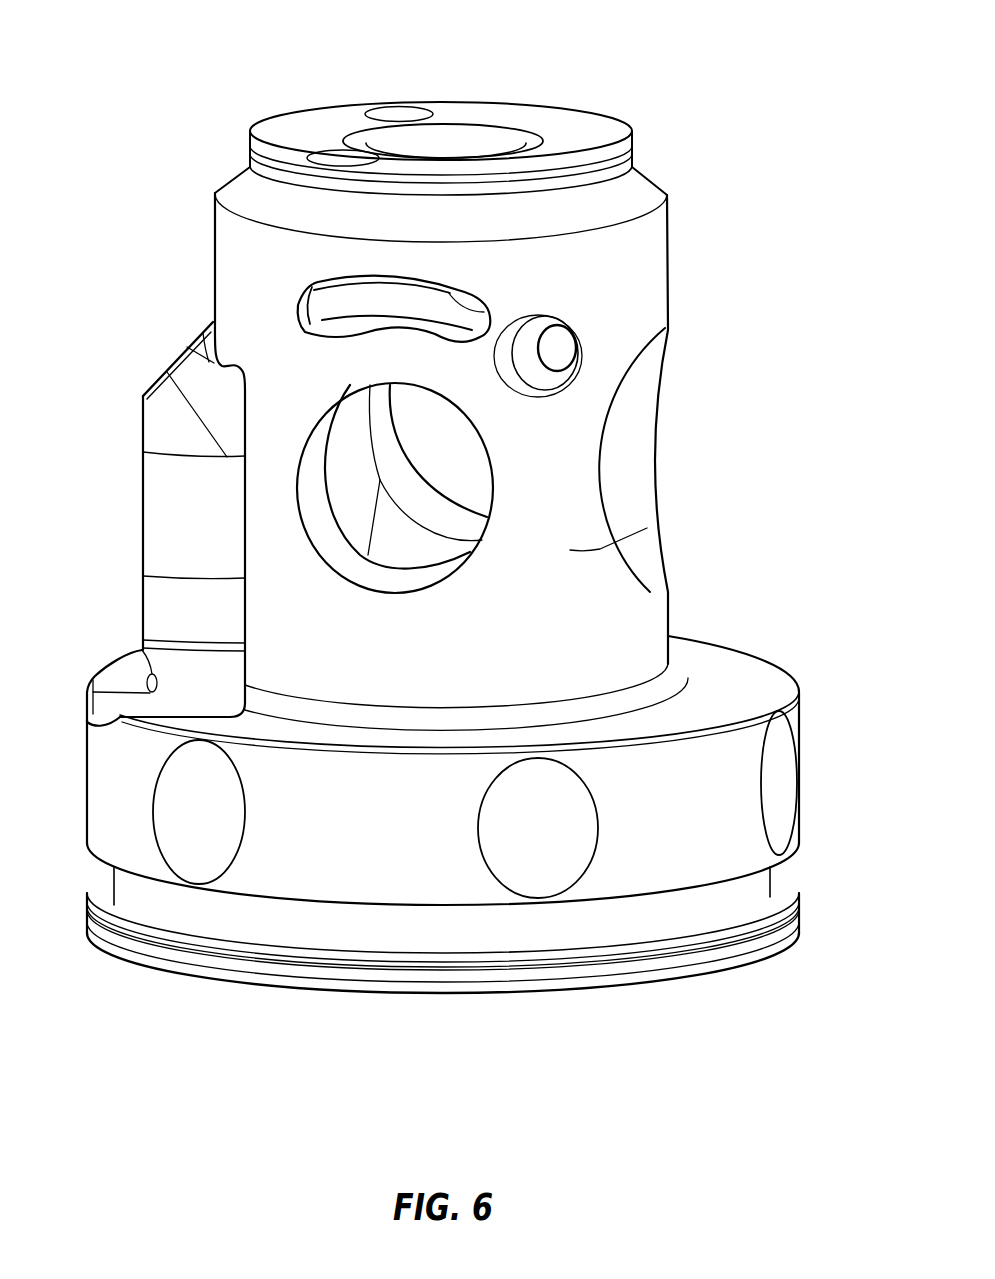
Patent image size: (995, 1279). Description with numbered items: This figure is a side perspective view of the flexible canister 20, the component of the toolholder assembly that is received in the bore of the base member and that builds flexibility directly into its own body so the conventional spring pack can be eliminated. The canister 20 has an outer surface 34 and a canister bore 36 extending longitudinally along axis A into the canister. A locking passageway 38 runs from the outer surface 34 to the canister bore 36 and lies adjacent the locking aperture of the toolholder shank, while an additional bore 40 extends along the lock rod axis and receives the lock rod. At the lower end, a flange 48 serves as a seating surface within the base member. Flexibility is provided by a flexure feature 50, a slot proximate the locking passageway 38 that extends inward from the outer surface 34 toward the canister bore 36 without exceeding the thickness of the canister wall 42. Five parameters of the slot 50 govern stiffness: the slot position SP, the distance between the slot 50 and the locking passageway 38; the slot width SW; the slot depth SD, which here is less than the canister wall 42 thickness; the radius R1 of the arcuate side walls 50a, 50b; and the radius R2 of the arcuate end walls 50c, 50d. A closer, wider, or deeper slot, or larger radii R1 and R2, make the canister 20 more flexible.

The flexible canister 20 is at (730, 310).
The outer surface 34 is at (659, 284).
The canister bore 36 is at (477, 153).
The locking passageway 38 is at (434, 490).
The additional bore 40 is at (641, 471).
The canister wall 42 is at (647, 528).
The flange 48 is at (733, 792).
The flexure feature 50 is at (450, 358).
The arcuate side wall 50a is at (378, 328).
The arcuate side wall 50b is at (462, 303).
The arcuate end wall 50c is at (302, 308).
The arcuate end wall 50d is at (483, 318).
The longitudinal axis A is at (441, 157).
The radius of arcuate side walls R1 is at (383, 415).
The radius of arcuate end walls R2 is at (312, 320).
The slot depth SD is at (404, 334).
The slot width SW is at (469, 312).
The slot position SP is at (378, 383).